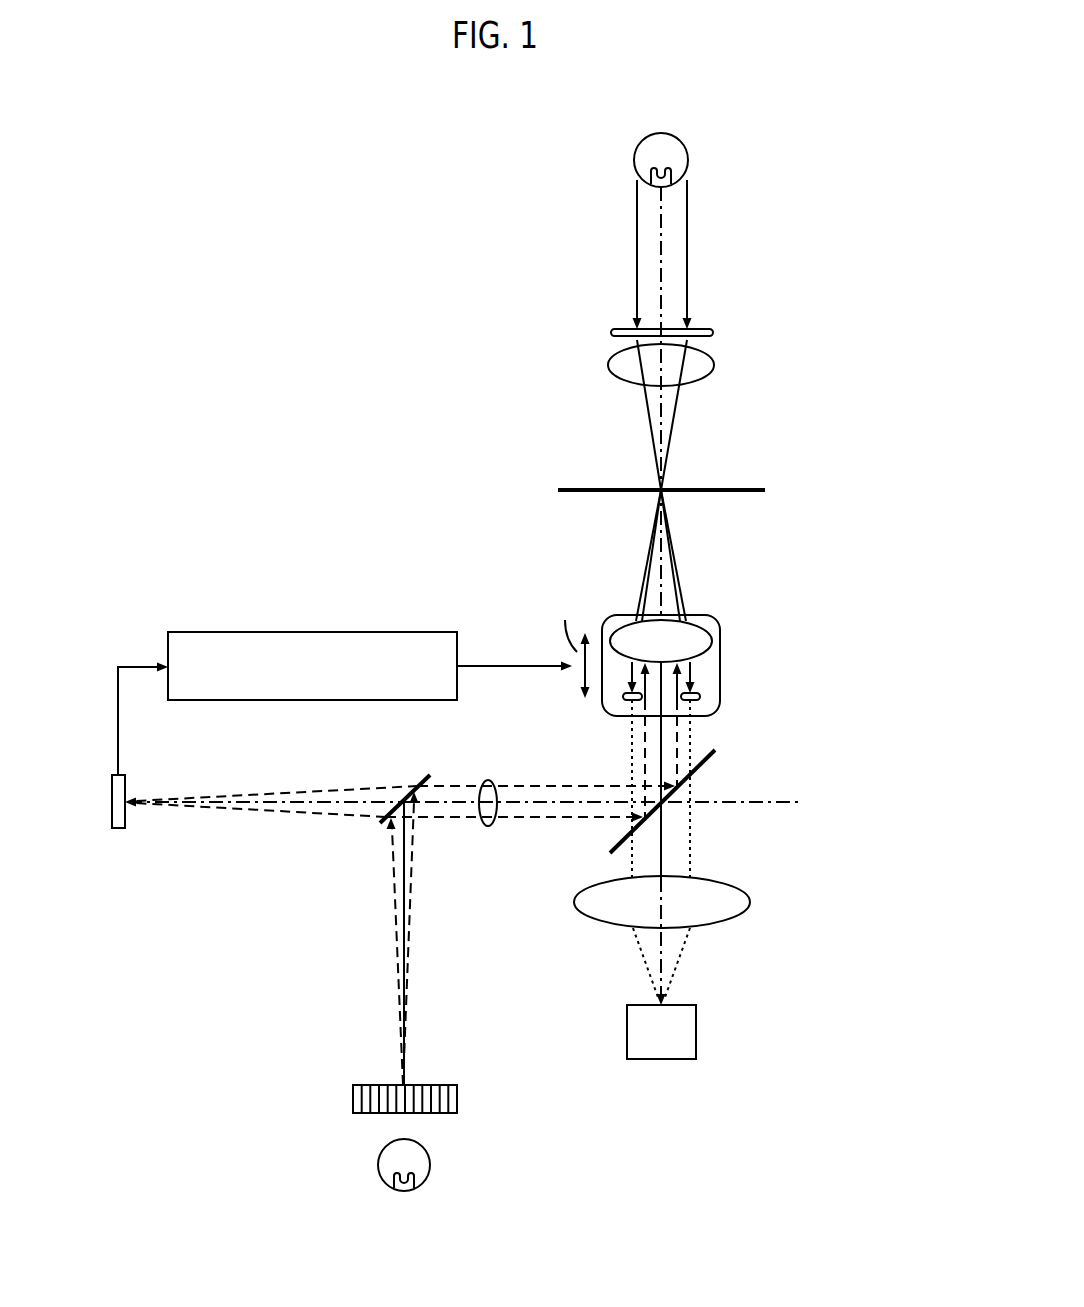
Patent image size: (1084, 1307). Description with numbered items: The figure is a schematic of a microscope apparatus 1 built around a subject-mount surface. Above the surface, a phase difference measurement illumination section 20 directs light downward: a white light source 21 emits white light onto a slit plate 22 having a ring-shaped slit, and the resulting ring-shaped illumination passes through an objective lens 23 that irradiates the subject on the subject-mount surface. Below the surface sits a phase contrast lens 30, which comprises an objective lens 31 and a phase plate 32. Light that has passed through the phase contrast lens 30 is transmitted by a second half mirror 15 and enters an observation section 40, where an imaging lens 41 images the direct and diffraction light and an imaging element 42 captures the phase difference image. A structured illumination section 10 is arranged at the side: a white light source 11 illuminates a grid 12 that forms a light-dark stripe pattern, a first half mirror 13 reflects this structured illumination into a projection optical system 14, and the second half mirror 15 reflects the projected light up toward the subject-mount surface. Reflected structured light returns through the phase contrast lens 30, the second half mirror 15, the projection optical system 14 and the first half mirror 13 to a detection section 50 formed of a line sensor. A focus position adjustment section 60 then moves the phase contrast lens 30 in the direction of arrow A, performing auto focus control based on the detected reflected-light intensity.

The microscope apparatus 1 is at (305, 282).
The structured illumination section 10 is at (352, 954).
The white light source 11 is at (430, 1163).
The grid 12 is at (457, 1097).
The first half mirror 13 is at (427, 777).
The projection optical system 14 is at (488, 781).
The second half mirror 15 is at (708, 752).
The phase difference measurement illumination section 20 is at (590, 247).
The white light source 21 is at (689, 158).
The slit plate 22 is at (611, 333).
The objective lens 23 is at (714, 365).
The phase contrast lens 30 is at (720, 636).
The objective lens 31 is at (704, 656).
The phase plate 32 is at (700, 697).
The observation section 40 is at (768, 960).
The imaging lens 41 is at (750, 900).
The imaging element 42 is at (696, 1037).
The detection section 50 is at (112, 776).
The focus position adjustment section 60 is at (433, 632).